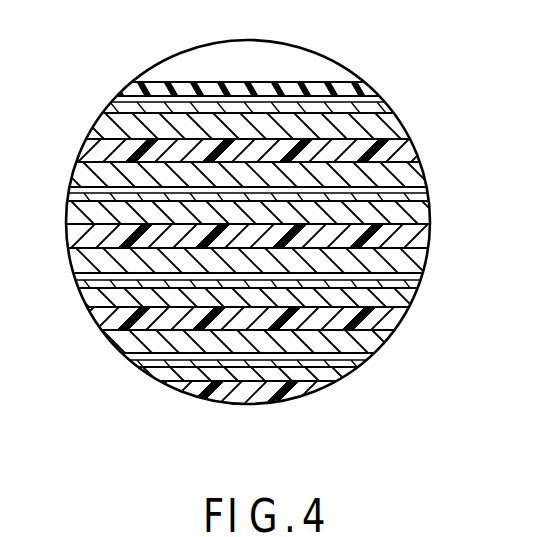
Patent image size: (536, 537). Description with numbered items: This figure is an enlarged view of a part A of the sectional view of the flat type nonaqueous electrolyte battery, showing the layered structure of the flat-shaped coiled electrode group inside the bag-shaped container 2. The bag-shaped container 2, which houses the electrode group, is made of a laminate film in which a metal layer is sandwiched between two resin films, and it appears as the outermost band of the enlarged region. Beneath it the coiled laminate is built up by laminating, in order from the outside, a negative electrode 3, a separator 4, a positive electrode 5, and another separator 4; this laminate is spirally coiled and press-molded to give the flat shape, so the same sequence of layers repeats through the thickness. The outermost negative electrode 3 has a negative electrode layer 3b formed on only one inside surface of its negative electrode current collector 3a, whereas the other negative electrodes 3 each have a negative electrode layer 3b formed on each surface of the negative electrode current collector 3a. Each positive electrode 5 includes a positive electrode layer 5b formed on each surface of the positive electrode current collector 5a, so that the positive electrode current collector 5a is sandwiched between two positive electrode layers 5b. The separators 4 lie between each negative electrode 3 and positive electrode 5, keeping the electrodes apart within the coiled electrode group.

The bag-shaped container 2 is at (365, 80).
The negative electrode 3 is at (296, 209).
The negative electrode current collector 3a is at (372, 93).
The negative electrode layer 3b is at (281, 227).
The separator 4 is at (97, 150).
The positive electrode 5 is at (277, 283).
The positive electrode current collector 5a is at (405, 187).
The positive electrode layer 5b is at (404, 159).
The part A is at (160, 66).